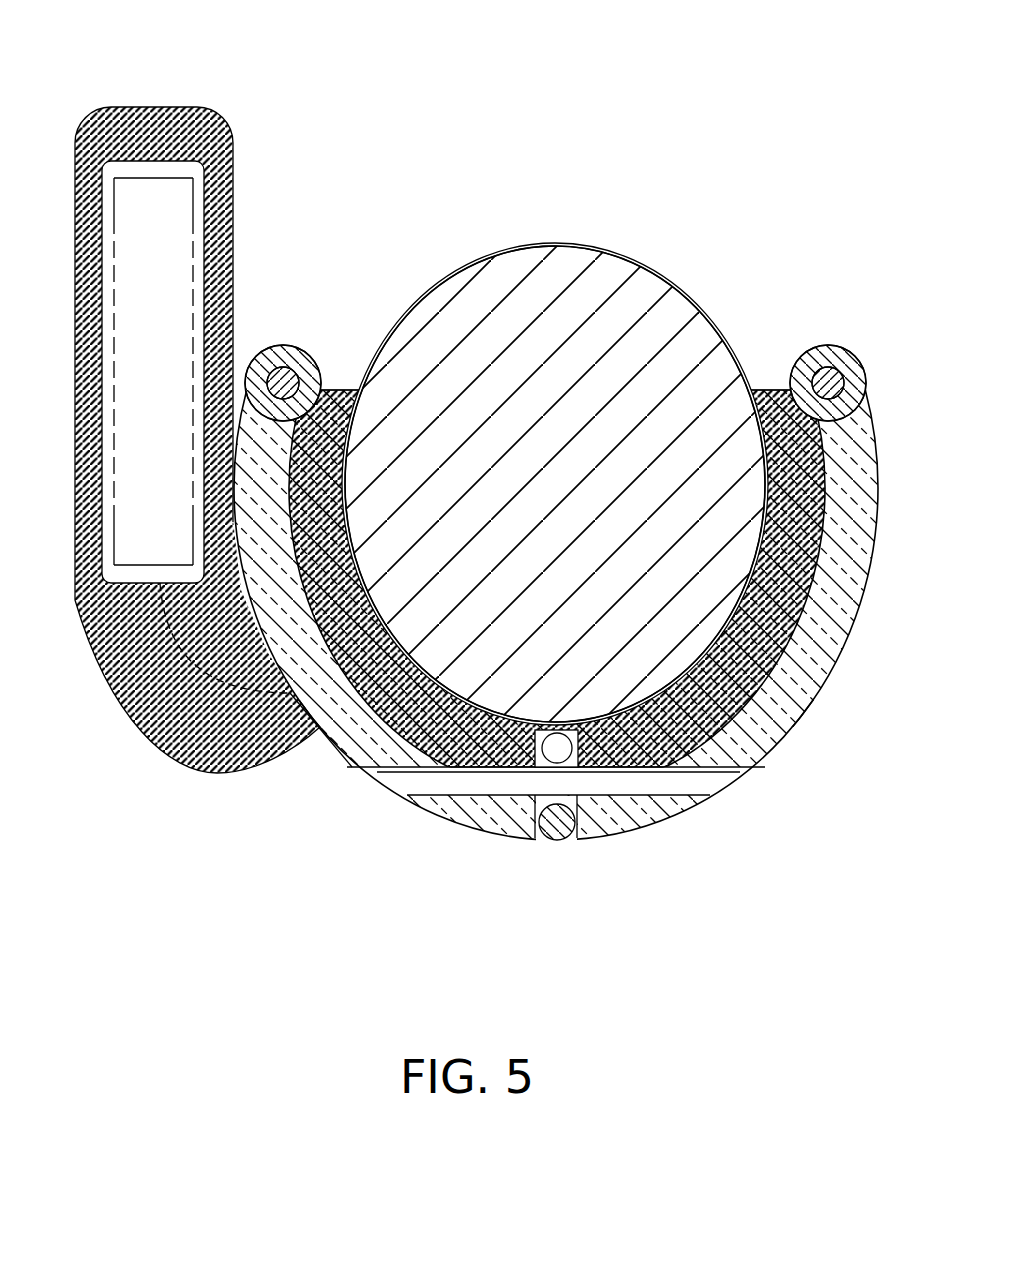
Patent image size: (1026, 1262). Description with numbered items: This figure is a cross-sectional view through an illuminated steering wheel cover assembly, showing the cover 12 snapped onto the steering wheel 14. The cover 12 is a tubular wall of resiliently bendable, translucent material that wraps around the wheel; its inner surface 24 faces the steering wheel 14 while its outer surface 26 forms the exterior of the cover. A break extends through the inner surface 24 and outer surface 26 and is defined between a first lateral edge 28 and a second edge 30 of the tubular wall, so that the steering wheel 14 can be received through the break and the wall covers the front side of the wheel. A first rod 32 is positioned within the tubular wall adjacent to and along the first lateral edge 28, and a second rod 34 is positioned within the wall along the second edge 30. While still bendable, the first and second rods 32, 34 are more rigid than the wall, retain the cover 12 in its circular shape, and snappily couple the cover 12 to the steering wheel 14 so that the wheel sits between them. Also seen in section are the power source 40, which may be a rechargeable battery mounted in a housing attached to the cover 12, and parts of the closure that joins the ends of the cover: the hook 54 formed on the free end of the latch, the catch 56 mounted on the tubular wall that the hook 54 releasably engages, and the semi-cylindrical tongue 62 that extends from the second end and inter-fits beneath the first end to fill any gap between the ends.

The cover 12 is at (622, 820).
The steering wheel 14 is at (668, 290).
The inner surface 24 is at (388, 708).
The outer surface 26 is at (445, 822).
The first lateral edge 28 is at (316, 362).
The second edge 30 is at (840, 372).
The first rod 32 is at (283, 383).
The second rod 34 is at (860, 370).
The power source 40 is at (137, 230).
The hook 54 is at (567, 748).
The catch 56 is at (512, 783).
The tongue 62 is at (797, 727).